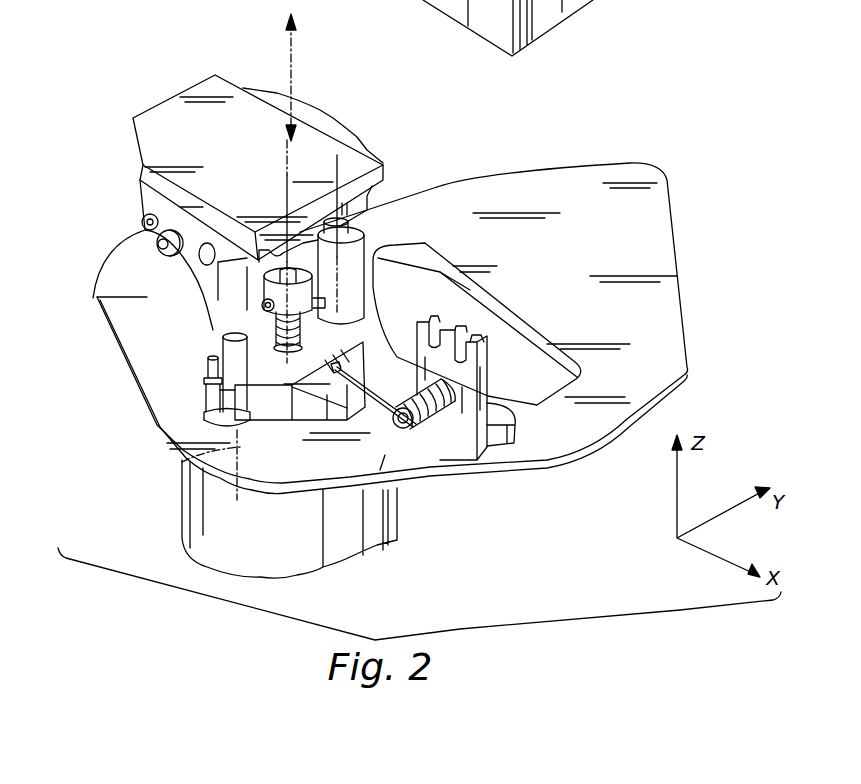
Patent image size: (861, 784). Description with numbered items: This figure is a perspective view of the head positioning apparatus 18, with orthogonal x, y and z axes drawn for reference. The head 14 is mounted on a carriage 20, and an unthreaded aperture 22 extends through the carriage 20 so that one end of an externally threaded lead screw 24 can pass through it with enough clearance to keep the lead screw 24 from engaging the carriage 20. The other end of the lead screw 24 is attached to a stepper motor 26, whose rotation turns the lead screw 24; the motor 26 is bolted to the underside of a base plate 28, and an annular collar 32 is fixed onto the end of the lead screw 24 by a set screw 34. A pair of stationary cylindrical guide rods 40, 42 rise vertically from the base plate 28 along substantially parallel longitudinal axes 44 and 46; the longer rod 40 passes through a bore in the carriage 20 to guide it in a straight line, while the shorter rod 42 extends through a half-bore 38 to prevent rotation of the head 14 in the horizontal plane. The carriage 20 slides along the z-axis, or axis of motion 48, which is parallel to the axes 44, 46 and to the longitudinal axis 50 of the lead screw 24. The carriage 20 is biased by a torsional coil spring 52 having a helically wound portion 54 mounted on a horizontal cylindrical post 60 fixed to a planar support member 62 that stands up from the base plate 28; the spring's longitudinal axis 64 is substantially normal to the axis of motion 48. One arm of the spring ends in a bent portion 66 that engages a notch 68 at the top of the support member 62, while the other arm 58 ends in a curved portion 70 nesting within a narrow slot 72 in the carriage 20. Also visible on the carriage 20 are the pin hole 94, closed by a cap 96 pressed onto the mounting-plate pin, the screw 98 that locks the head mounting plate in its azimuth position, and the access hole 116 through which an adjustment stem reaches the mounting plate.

The head 14 is at (338, 117).
The head positioning apparatus 18 is at (118, 169).
The carriage 20 is at (298, 423).
The unthreaded aperture 22 is at (300, 381).
The lead screw 24 is at (305, 330).
The stepper motor 26 is at (213, 538).
The base plate 28 is at (668, 342).
The annular collar 32 is at (262, 305).
The set screw 34 is at (253, 325).
The half-bore 38 is at (208, 387).
The guide rod 40 is at (378, 226).
The guide rod 42 is at (220, 350).
The longitudinal axis 44 is at (375, 148).
The longitudinal axis 46 is at (182, 462).
The axis of motion 48 is at (297, 57).
The longitudinal axis 50 is at (285, 188).
The torsional coil spring 52 is at (433, 432).
The helically wound portion 54 is at (430, 423).
The arm 58 is at (367, 428).
The cylindrical post 60 is at (408, 425).
The support member 62 is at (483, 367).
The longitudinal axis 64 is at (383, 443).
The bent portion 66 is at (462, 333).
The notch 68 is at (453, 328).
The curved portion 70 is at (340, 370).
The narrow slot 72 is at (360, 385).
The pin hole 94 is at (140, 232).
The cap 96 is at (142, 218).
The screw 98 is at (160, 248).
The access hole 116 is at (205, 243).